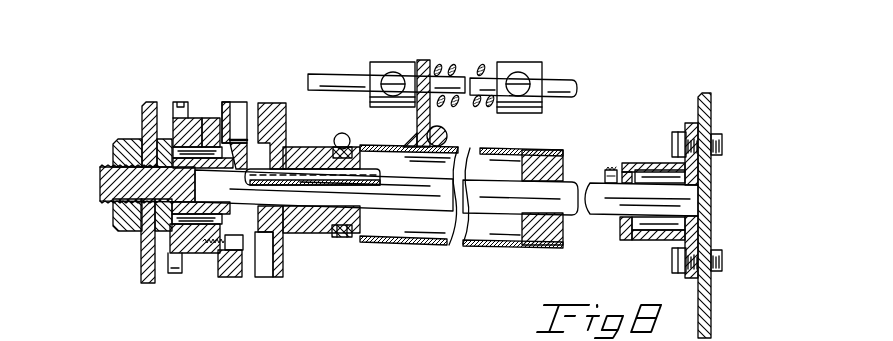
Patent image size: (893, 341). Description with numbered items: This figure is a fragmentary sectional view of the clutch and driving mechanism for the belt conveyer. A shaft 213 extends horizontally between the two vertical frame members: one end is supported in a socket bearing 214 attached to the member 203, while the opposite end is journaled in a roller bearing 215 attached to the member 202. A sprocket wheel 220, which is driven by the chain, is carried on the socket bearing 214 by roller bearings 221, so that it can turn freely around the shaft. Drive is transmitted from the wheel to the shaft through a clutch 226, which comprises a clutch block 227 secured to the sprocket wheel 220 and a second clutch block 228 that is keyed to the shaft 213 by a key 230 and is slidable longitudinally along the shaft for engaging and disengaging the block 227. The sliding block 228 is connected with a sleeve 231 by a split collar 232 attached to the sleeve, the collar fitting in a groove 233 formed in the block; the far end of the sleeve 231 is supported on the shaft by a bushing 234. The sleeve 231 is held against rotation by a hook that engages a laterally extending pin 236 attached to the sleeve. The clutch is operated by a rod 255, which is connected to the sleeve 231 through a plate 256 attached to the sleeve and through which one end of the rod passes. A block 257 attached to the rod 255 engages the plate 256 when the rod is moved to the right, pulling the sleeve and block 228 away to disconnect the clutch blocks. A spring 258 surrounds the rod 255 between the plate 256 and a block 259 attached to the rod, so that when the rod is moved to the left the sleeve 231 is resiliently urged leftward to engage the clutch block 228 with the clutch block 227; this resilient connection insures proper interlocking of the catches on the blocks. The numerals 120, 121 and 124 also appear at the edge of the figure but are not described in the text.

The vertical member 203 is at (142, 124).
The socket bearing 214 is at (120, 229).
The sprocket wheel 220 is at (178, 102).
The roller bearings 221 is at (192, 225).
The clutch 226 is at (263, 322).
The clutch block 227 is at (235, 105).
The clutch block 228 is at (270, 103).
The key 230 is at (312, 170).
The shaft 213 is at (565, 192).
The sleeve 231 is at (398, 244).
The split collar 232 is at (336, 238).
The groove 233 is at (346, 238).
The bushing 234 is at (555, 228).
The rod 255 is at (575, 86).
The plate 256 is at (421, 60).
The block 257 is at (378, 70).
The spring 258 is at (477, 74).
The block 259 is at (535, 66).
The pin 236 is at (449, 142).
The roller bearing 215 is at (653, 182).
The vertical member 202 is at (708, 130).
The member 124 is at (418, 340).
The assembly 120 is at (398, 340).
The member 121 is at (440, 340).